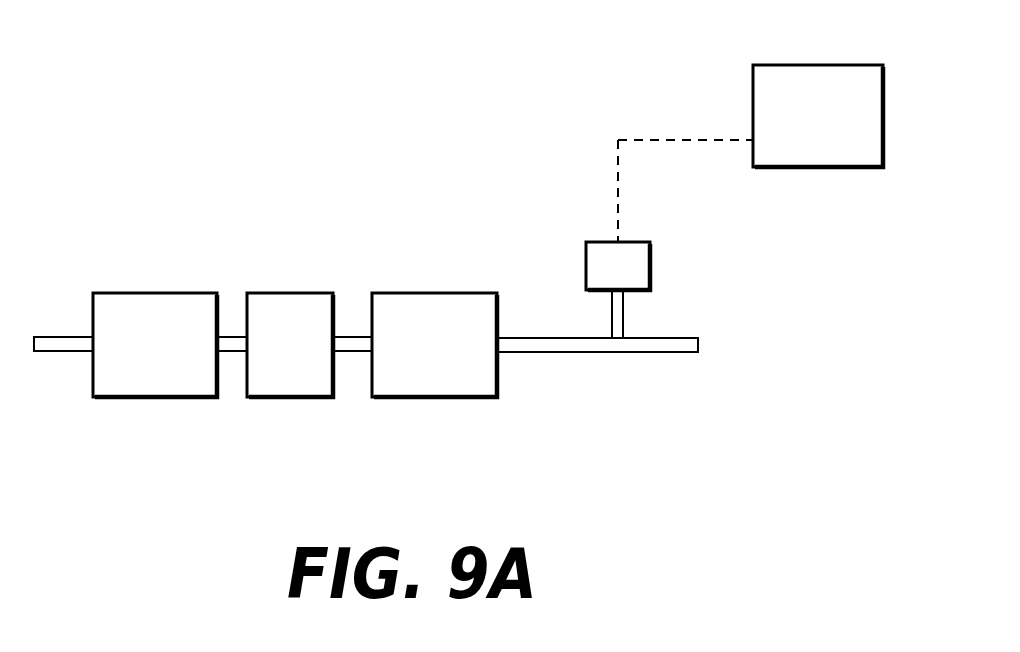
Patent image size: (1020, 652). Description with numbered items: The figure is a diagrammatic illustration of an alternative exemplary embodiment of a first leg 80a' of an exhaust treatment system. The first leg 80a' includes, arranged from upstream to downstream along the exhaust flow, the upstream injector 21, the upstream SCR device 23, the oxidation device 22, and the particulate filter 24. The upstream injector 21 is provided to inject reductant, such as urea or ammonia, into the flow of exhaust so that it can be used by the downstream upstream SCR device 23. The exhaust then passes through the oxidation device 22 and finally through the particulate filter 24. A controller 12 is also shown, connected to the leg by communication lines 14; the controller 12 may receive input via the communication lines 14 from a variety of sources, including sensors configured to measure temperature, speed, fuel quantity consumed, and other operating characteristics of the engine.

The first leg 80a' is at (366, 211).
The particulate filter 24 is at (139, 293).
The oxidation device 22 is at (302, 293).
The upstream SCR device 23 is at (412, 293).
The upstream injector 21 is at (646, 242).
The controller 12 is at (839, 65).
The communication lines 14 is at (618, 140).